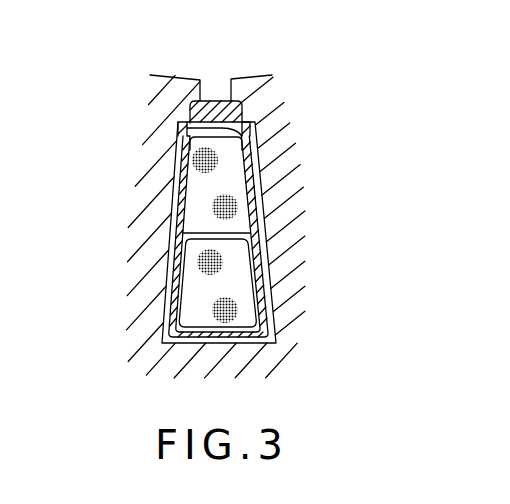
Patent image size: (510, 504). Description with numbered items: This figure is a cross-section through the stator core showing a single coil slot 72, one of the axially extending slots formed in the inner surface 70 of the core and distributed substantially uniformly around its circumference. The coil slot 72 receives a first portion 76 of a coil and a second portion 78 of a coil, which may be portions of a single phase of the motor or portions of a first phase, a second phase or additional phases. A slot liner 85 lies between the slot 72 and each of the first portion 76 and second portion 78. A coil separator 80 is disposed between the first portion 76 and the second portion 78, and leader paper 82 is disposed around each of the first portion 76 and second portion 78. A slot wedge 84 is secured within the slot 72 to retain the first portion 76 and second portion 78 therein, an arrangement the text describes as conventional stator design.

The inner surface 70 is at (253, 75).
The slot wedge 84 is at (225, 100).
The leader paper 82 is at (274, 272).
The slot liner 85 is at (163, 347).
The coil slot 72 is at (264, 219).
The coil separator 80 is at (190, 228).
The second portion of a coil 78 is at (223, 158).
The first portion of a coil 76 is at (198, 298).